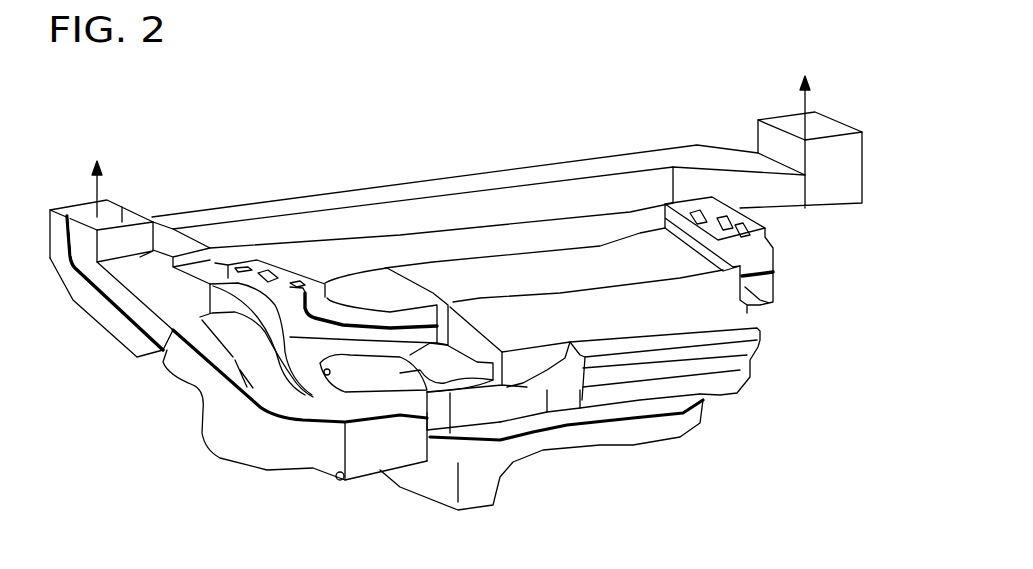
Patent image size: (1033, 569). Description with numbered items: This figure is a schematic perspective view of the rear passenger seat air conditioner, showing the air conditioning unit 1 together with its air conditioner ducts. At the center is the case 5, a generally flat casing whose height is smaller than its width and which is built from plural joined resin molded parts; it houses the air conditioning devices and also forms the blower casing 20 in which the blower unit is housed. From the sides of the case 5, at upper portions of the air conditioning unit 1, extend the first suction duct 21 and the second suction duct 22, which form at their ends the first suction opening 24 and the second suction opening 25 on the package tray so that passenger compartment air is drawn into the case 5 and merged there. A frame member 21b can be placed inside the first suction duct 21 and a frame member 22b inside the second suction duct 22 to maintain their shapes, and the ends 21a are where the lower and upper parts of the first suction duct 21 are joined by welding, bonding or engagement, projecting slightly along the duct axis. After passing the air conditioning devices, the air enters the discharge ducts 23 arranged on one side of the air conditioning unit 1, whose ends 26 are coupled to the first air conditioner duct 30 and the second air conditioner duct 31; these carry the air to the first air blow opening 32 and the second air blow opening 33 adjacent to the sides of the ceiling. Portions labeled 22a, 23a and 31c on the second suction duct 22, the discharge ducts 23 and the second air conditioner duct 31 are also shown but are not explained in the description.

The air conditioning unit 1 is at (637, 460).
The case 5 is at (766, 356).
The blower casing 20 is at (693, 420).
The first suction duct 21 is at (352, 290).
The ends 21a is at (400, 320).
The frame member 21b is at (237, 265).
The second suction duct 22 is at (759, 208).
The fixing portion 22a is at (773, 262).
The frame member 22b is at (690, 210).
The discharge ducts 23 is at (243, 430).
The rim 23a is at (312, 430).
The first suction opening 24 is at (270, 267).
The second suction opening 25 is at (762, 222).
The ends 26 is at (250, 322).
The first air conditioner duct 30 is at (585, 167).
The second air conditioner duct 31 is at (110, 327).
The opening 31c is at (115, 205).
The first air blow opening 32 is at (822, 125).
The second air blow opening 33 is at (83, 208).